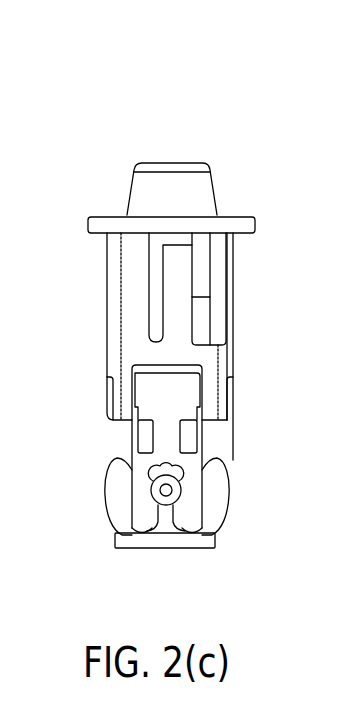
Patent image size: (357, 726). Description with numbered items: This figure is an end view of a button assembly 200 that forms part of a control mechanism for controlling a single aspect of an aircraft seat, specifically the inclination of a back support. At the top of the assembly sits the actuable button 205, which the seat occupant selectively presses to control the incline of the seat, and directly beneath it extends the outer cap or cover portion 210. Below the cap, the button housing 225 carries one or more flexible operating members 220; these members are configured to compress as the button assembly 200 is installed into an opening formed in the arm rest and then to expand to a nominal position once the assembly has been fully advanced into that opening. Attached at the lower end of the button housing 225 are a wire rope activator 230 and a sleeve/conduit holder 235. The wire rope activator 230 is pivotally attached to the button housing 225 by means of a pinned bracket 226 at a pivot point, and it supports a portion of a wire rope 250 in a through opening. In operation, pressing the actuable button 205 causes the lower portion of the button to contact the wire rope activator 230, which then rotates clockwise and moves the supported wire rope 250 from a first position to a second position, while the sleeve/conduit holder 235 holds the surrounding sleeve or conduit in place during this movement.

The button assembly 200 is at (258, 103).
The actuable button 205 is at (172, 183).
The outer cap or cover portion 210 is at (243, 223).
The flexible operating members 220 is at (170, 308).
The button housing 225 is at (123, 338).
The pinned bracket 226 is at (106, 402).
The wire rope activator 230 is at (102, 443).
The sleeve/conduit holder 235 is at (115, 541).
The wire rope 250 is at (170, 490).